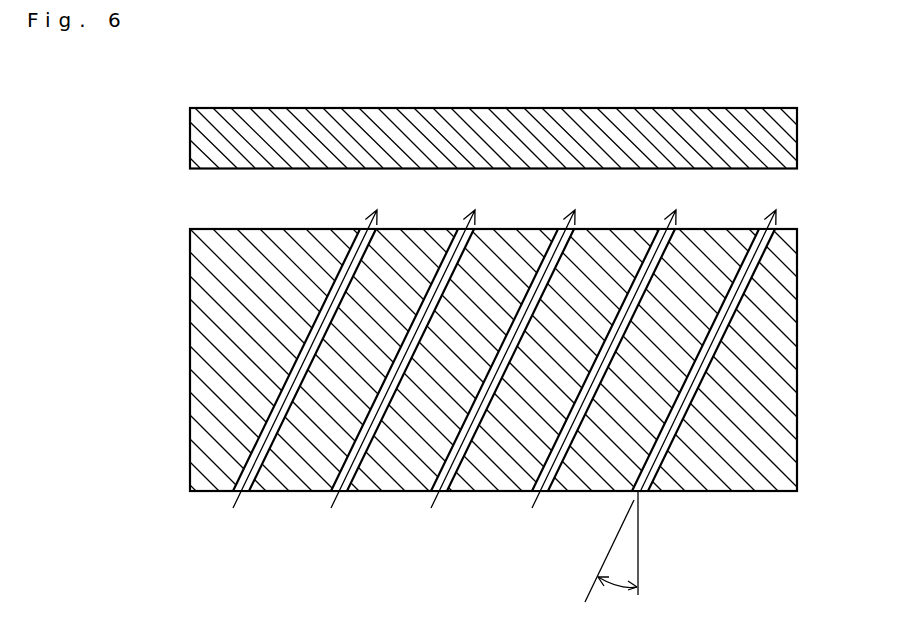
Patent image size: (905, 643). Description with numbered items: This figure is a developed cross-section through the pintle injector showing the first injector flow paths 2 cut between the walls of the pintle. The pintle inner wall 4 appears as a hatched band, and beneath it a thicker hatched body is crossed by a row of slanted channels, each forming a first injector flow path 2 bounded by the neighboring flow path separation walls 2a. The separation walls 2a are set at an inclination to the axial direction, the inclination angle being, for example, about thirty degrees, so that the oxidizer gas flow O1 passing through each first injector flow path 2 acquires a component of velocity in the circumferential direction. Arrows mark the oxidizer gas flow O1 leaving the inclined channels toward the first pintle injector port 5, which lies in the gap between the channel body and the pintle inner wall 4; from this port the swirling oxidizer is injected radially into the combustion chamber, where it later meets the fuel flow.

The first injector flow path 2 is at (370, 455).
The flow path separation wall 2a is at (420, 440).
The pintle inner wall 4 is at (335, 152).
The first pintle injector port 5 is at (553, 203).
The oxidizer gas flow O1 is at (778, 216).